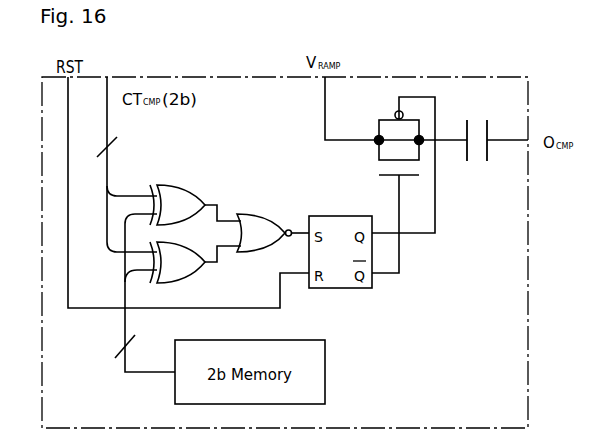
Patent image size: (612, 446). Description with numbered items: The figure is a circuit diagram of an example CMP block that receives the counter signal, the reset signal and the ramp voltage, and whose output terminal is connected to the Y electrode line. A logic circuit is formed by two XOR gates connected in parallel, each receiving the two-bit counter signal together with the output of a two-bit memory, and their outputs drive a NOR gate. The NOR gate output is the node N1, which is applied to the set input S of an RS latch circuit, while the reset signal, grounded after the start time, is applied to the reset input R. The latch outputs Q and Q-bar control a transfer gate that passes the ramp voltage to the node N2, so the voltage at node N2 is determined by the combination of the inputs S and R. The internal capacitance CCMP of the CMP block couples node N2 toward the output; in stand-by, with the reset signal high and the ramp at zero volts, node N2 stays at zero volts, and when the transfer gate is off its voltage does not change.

The node N1 is at (297, 222).
The node N2 is at (450, 127).
The internal capacitance CCMP is at (480, 172).